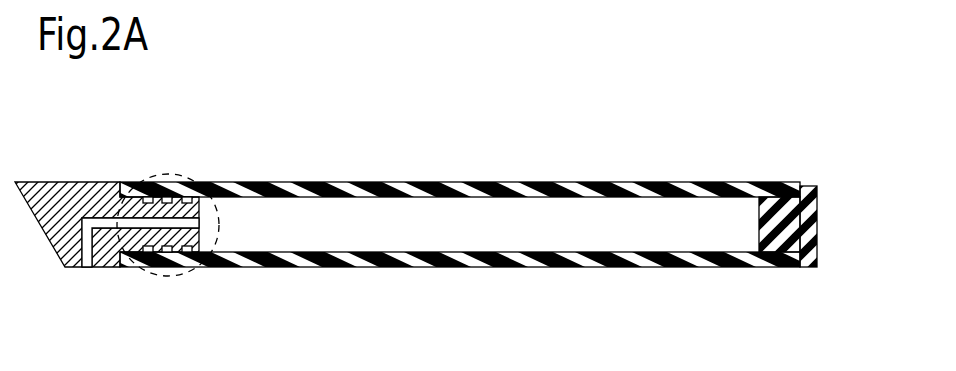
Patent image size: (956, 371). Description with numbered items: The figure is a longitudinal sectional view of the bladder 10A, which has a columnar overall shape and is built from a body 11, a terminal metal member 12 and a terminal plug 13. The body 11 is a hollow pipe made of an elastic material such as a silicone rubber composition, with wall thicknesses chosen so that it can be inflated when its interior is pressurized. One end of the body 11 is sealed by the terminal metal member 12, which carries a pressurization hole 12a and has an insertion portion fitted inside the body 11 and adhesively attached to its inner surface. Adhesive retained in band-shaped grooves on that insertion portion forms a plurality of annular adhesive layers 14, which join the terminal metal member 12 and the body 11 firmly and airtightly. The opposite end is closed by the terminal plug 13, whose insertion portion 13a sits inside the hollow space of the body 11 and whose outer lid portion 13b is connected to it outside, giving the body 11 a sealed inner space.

The bladder 10A is at (427, 195).
The body 11 is at (311, 182).
The terminal metal member 12 is at (107, 209).
The pressurization hole 12a is at (88, 266).
The terminal plug 13 is at (781, 158).
The insertion portion 13a is at (780, 183).
The outer lid portion 13b is at (809, 182).
The adhesive layers 14 is at (176, 276).